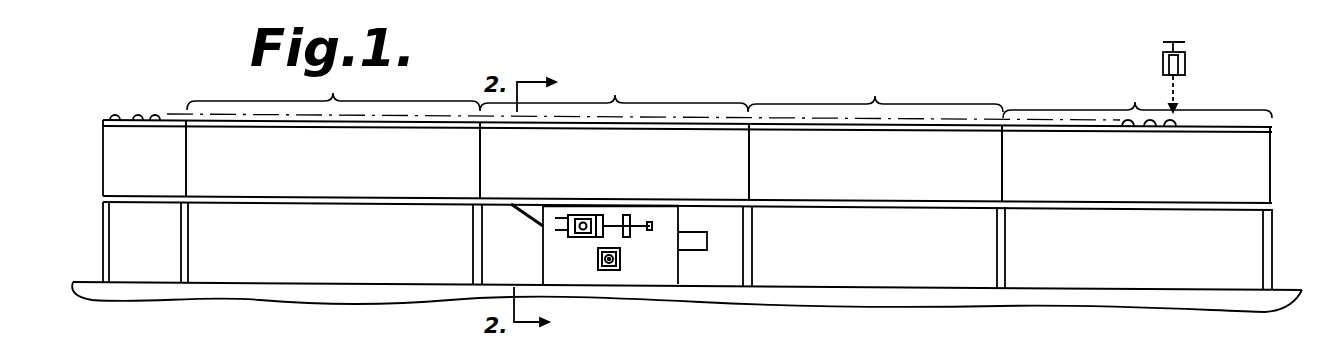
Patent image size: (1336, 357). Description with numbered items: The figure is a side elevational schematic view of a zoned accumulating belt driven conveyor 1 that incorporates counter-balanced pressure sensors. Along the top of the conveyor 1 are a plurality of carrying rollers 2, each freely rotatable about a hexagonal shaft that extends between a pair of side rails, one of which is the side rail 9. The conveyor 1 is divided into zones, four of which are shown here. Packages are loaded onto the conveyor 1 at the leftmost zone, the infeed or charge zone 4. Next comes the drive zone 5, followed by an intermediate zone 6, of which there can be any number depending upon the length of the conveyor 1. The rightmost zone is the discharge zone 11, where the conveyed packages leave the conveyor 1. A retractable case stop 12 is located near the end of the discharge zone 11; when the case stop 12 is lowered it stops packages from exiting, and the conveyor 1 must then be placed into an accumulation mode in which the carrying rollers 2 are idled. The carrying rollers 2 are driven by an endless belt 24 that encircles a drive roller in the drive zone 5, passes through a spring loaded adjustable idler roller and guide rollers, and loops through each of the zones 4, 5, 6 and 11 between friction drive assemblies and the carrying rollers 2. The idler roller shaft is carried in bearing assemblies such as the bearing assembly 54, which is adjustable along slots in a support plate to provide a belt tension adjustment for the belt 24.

The belt driven conveyor 1 is at (804, 91).
The carrying rollers 2 is at (139, 117).
The infeed or charge zone 4 is at (333, 136).
The drive zone 5 is at (614, 134).
The intermediate zone 6 is at (875, 140).
The side rail 9 is at (362, 193).
The discharge zone 11 is at (1137, 142).
The retractable case stop 12 is at (1177, 96).
The endless belt 24 is at (527, 218).
The bearing assembly 54 is at (622, 211).